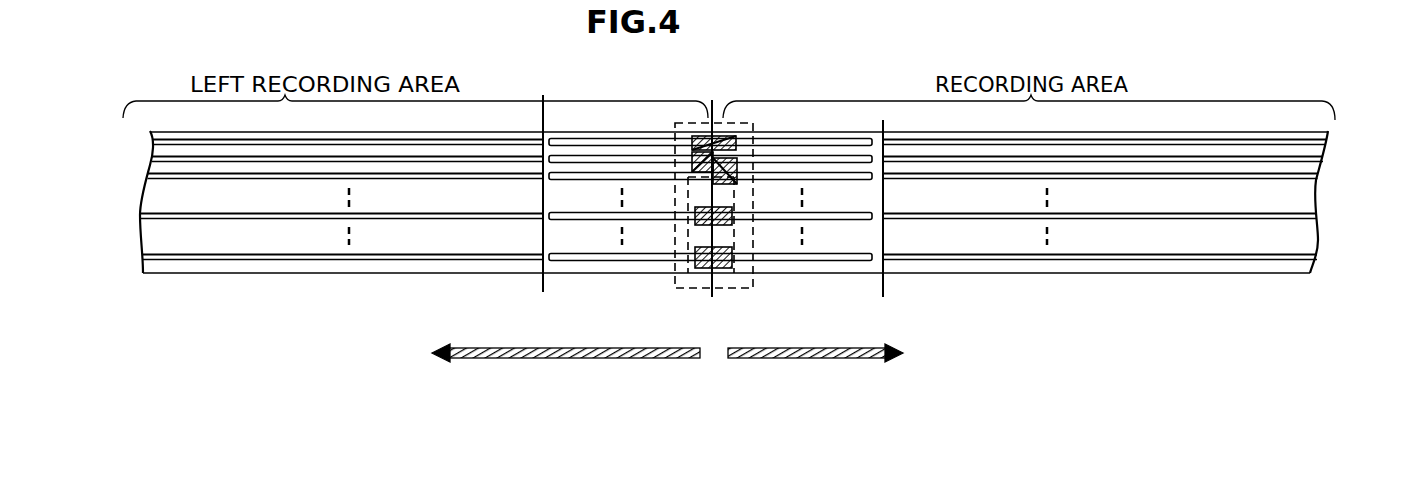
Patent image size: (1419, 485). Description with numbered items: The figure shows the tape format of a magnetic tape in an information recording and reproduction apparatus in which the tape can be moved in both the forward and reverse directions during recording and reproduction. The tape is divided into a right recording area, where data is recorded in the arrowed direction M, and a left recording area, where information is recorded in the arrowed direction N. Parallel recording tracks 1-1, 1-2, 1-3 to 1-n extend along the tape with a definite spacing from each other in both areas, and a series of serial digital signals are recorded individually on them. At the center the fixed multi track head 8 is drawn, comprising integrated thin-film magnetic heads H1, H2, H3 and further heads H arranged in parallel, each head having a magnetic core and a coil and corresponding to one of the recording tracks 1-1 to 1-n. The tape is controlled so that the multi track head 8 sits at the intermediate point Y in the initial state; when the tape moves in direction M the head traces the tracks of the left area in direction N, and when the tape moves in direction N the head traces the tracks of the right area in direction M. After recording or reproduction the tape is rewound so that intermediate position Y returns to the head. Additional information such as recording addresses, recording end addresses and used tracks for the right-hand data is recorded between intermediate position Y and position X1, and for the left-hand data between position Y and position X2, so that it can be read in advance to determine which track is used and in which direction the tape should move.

The recording track 1-1 is at (152, 141).
The recording track 1-2 is at (153, 160).
The recording track 1-3 is at (150, 178).
The recording track 1-n is at (147, 258).
The multi track head 8 is at (738, 270).
The magnetic head H is at (740, 248).
The magnetic head H1 is at (735, 138).
The magnetic head H2 is at (693, 165).
The magnetic head H3 is at (740, 184).
The position X1 is at (880, 223).
The position X2 is at (542, 211).
The intermediate point Y is at (711, 212).
The arrowed direction N is at (610, 358).
The arrowed direction M is at (787, 358).